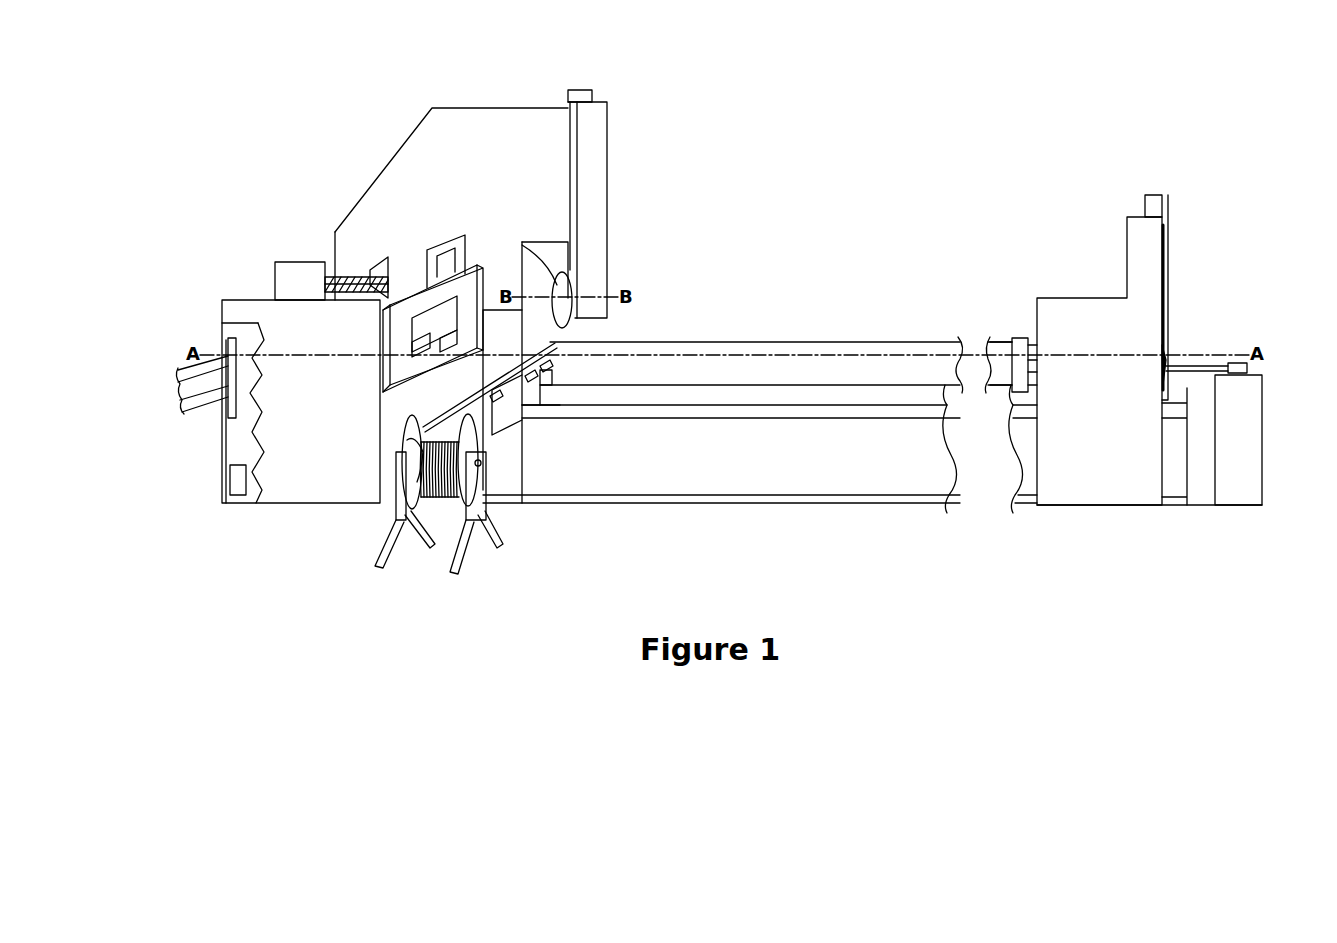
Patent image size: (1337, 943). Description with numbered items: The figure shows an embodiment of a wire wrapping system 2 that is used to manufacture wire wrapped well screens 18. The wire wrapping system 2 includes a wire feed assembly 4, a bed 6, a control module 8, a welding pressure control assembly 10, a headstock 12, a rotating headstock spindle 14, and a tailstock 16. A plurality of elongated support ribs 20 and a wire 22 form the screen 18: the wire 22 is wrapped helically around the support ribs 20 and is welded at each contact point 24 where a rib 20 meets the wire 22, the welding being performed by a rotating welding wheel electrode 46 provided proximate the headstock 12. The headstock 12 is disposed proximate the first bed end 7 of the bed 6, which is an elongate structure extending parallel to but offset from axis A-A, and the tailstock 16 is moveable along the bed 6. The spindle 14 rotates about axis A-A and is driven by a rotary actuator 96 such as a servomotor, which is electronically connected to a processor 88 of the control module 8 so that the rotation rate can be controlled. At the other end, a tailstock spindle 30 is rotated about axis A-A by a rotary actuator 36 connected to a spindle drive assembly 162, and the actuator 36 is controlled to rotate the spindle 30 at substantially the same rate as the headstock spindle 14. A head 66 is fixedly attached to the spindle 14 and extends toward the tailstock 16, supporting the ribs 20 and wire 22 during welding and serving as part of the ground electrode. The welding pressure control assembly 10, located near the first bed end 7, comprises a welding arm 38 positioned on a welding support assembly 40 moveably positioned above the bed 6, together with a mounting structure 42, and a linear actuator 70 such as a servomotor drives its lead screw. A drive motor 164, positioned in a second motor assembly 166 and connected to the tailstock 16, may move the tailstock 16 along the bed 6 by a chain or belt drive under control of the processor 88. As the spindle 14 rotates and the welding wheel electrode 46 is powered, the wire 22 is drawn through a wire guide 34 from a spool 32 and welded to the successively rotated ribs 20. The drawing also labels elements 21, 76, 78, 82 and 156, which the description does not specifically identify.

The wire wrapping system 2 is at (902, 192).
The wire feed assembly 4 is at (482, 540).
The bed 6 is at (800, 477).
The first bed end 7 is at (522, 448).
The control module 8 is at (385, 372).
The welding pressure control assembly 10 is at (658, 292).
The headstock 12 is at (406, 401).
The rotating headstock spindle 14 is at (521, 320).
The tailstock 16 is at (1112, 305).
The wire wrapped well screen 18 is at (806, 343).
The elongated support ribs 20 is at (200, 393).
The tube end 21 is at (1000, 340).
The wire 22 is at (484, 440).
The contact point 24 is at (552, 343).
The tailstock spindle 30 is at (1022, 336).
The spool 32 is at (410, 502).
The wire guide 34 is at (522, 386).
The rotary actuator 36 is at (1152, 193).
The welding arm 38 is at (567, 277).
The welding support assembly 40 is at (603, 218).
The mounting structure 42 is at (555, 150).
The rotating welding wheel electrode 46 is at (555, 291).
The head 66 is at (546, 382).
The linear actuator 70 is at (590, 92).
The battery box 76 is at (296, 262).
The hatched pad 78 is at (334, 275).
The wedge indicator 82 is at (372, 270).
The processor 88 is at (395, 326).
The rotary actuator 96 is at (234, 495).
The mirror plate 156 is at (1172, 205).
The spindle drive assembly 162 is at (1166, 360).
The drive motor 164 is at (1247, 368).
The second motor assembly 166 is at (1245, 418).